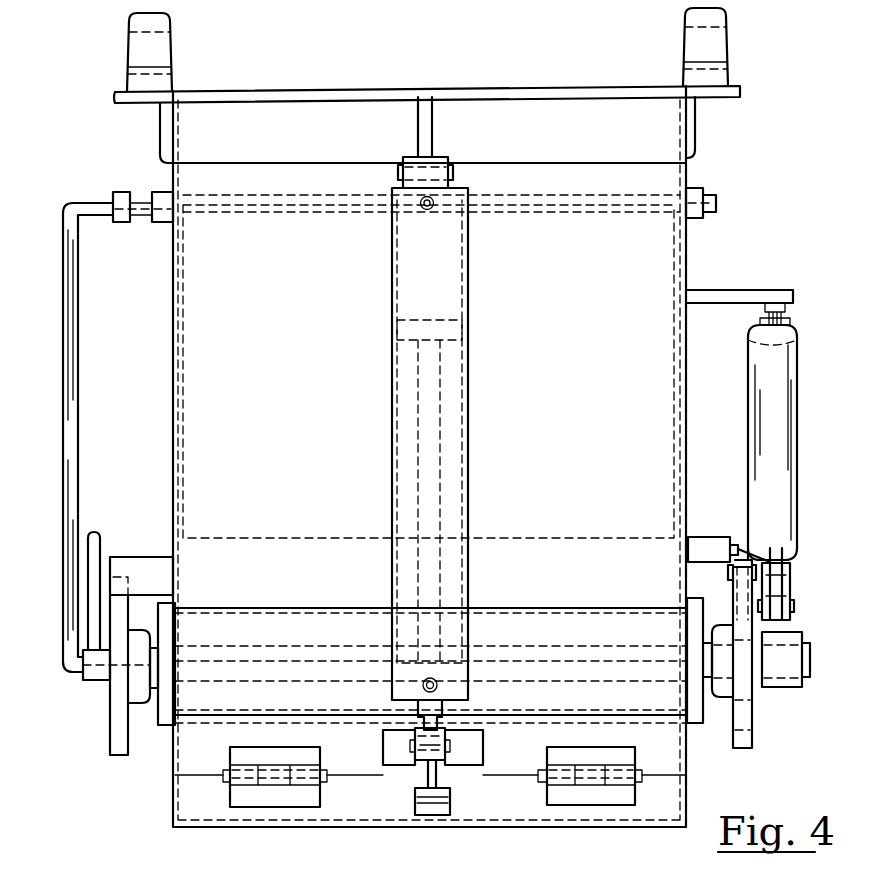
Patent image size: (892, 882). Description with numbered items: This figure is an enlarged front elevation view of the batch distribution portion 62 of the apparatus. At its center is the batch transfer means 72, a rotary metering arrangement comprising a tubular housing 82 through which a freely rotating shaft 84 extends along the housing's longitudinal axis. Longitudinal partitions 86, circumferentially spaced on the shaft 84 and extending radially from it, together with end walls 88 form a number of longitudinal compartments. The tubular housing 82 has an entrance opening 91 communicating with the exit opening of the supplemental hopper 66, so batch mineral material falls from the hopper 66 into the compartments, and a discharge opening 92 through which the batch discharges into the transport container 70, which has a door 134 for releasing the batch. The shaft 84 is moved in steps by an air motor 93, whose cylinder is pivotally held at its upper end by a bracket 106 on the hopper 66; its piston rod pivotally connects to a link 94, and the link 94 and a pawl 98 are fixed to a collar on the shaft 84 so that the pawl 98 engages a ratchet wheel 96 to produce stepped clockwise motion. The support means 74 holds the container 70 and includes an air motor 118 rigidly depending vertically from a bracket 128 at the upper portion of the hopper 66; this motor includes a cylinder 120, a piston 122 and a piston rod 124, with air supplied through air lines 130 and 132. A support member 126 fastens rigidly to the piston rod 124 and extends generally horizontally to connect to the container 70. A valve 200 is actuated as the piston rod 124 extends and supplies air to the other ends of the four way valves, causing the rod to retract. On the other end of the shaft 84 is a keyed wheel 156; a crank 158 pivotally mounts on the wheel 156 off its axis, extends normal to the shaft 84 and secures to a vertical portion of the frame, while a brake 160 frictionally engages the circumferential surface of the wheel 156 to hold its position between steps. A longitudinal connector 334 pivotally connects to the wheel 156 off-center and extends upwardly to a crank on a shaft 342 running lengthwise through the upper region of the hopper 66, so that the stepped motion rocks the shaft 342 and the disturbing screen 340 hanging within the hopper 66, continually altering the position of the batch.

The batch distribution portion 62 is at (724, 258).
The supplemental hopper 66 is at (640, 232).
The transport container 70 is at (173, 765).
The batch transfer means 72 is at (698, 744).
The support means 74 is at (489, 734).
The tubular housing 82 is at (158, 713).
The shaft 84 is at (812, 663).
The longitudinal partitions 86 is at (237, 633).
The end walls 88 is at (180, 633).
The entrance opening 91 is at (367, 607).
The discharge opening 92 is at (570, 728).
The air motor 93 is at (797, 375).
The link 94 is at (790, 620).
The ratchet wheel 96 is at (753, 727).
The pawl 98 is at (735, 603).
The bracket 106 is at (688, 172).
The air motor 118 is at (481, 351).
The cylinder 120 is at (392, 273).
The piston 122 is at (420, 318).
The piston rod 124 is at (440, 487).
The support member 126 is at (415, 733).
The bracket 128 is at (432, 120).
The air line 130 is at (424, 209).
The air line 132 is at (432, 678).
The door 134 is at (183, 805).
The wheel 156 is at (110, 733).
The crank 158 is at (100, 535).
The brake 160 is at (153, 557).
The valve 200 is at (725, 537).
The longitudinal connector 334 is at (78, 313).
The disturbing screen 340 is at (183, 283).
The shaft 342 is at (713, 198).